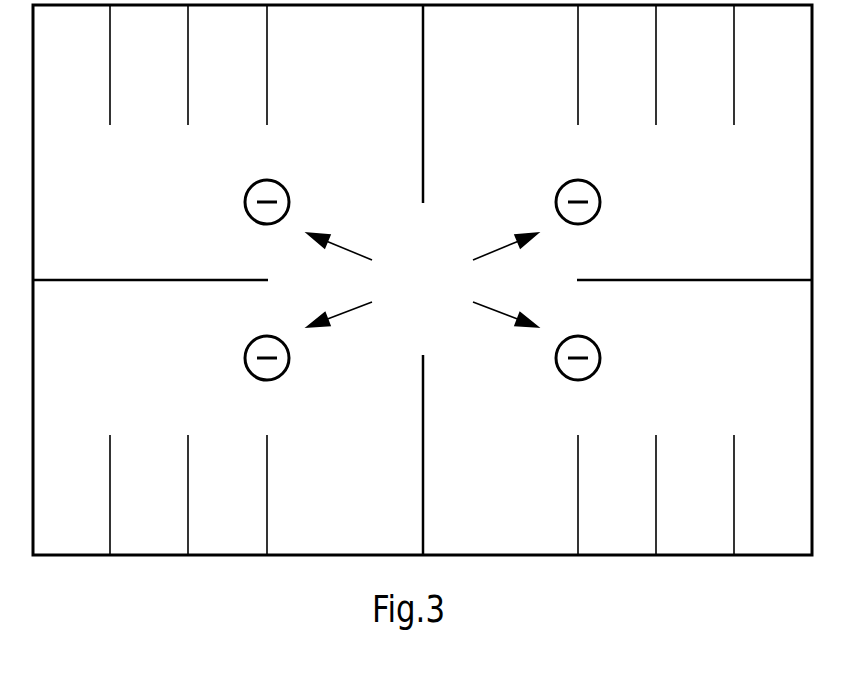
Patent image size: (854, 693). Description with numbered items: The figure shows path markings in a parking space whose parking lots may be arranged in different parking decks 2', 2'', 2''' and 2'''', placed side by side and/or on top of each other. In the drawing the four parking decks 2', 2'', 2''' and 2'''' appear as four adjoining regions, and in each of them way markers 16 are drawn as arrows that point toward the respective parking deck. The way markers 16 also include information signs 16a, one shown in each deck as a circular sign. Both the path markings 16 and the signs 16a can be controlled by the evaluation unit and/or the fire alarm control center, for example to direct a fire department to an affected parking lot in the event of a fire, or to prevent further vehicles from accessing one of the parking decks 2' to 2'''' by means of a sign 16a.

The parking deck 2' is at (165, 95).
The parking deck 2'' is at (670, 94).
The parking deck 2''' is at (164, 463).
The parking deck 2'''' is at (673, 462).
The way marker 16 is at (349, 251).
The information sign 16a is at (244, 199).